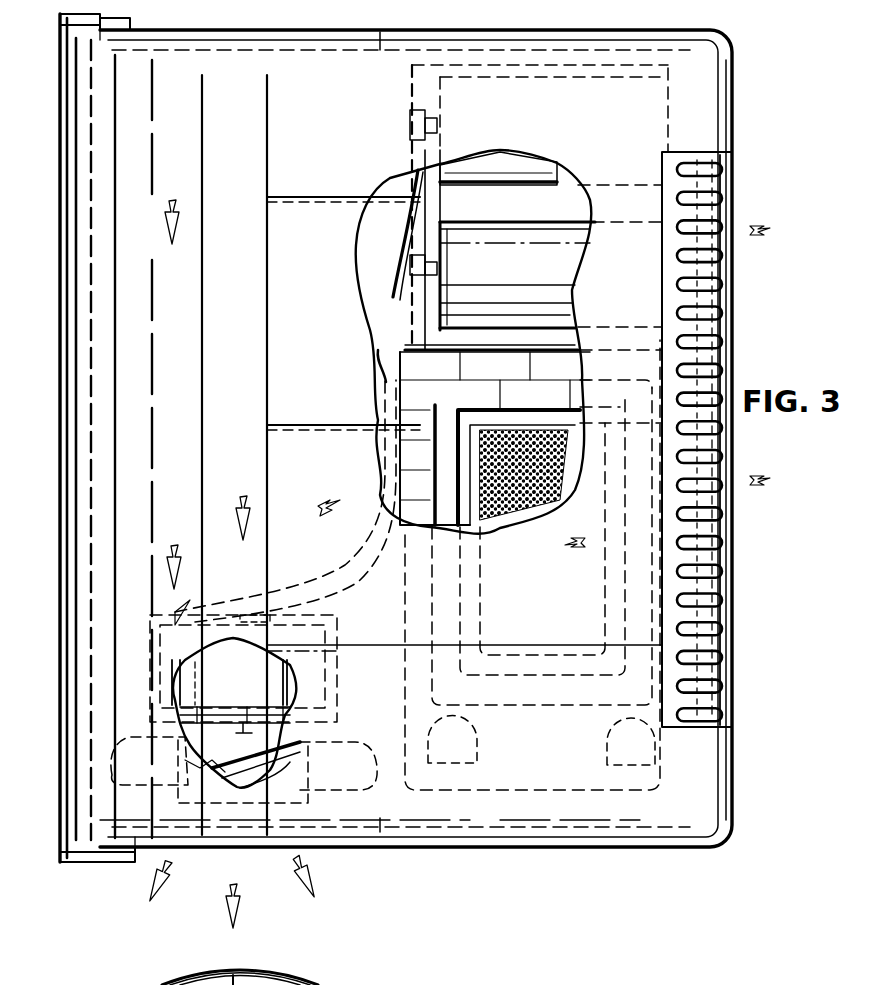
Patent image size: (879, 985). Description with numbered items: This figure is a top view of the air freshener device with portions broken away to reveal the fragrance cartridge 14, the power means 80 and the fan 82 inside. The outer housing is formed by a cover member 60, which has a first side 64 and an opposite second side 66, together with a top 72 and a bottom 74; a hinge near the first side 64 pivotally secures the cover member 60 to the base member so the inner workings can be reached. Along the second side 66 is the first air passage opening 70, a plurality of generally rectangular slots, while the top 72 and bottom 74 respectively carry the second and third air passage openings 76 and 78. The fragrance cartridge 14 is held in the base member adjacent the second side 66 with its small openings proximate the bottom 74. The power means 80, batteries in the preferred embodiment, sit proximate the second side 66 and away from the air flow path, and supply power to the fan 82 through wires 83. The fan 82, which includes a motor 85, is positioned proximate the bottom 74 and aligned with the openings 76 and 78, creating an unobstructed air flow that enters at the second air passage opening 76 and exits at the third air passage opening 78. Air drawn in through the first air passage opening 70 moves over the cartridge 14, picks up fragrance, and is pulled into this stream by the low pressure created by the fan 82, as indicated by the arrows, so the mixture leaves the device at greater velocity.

The cartridge 14 is at (648, 792).
The cover member 60 is at (342, 139).
The first side 64 is at (60, 462).
The second side 66 is at (732, 132).
The first air passage opening 70 is at (732, 572).
The top 72 is at (478, 40).
The bottom 74 is at (565, 848).
The second air passage opening 76 is at (168, 40).
The third air passage opening 78 is at (262, 847).
The power means 80 is at (568, 262).
The fan 82 is at (190, 760).
The wires 83 is at (296, 578).
The motor 85 is at (242, 692).